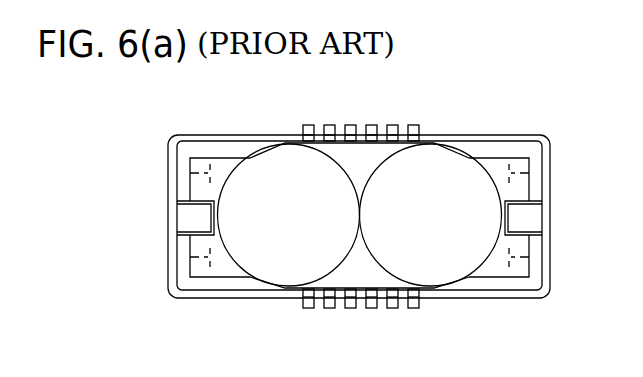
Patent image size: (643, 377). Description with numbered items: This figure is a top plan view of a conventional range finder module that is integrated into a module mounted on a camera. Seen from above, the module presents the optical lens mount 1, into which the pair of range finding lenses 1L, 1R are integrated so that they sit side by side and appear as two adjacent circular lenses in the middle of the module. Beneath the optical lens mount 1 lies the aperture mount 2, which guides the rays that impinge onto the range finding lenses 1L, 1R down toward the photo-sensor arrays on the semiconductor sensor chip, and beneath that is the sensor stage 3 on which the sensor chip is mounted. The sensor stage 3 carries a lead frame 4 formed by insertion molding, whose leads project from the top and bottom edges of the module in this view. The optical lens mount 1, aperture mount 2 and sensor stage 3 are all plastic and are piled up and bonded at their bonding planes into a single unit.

The optical lens mount 1 is at (358, 157).
The range finding lens 1L is at (278, 147).
The range finding lens 1R is at (452, 147).
The aperture mount 2 is at (533, 176).
The sensor stage 3 is at (533, 223).
The lead frame 4 is at (369, 299).